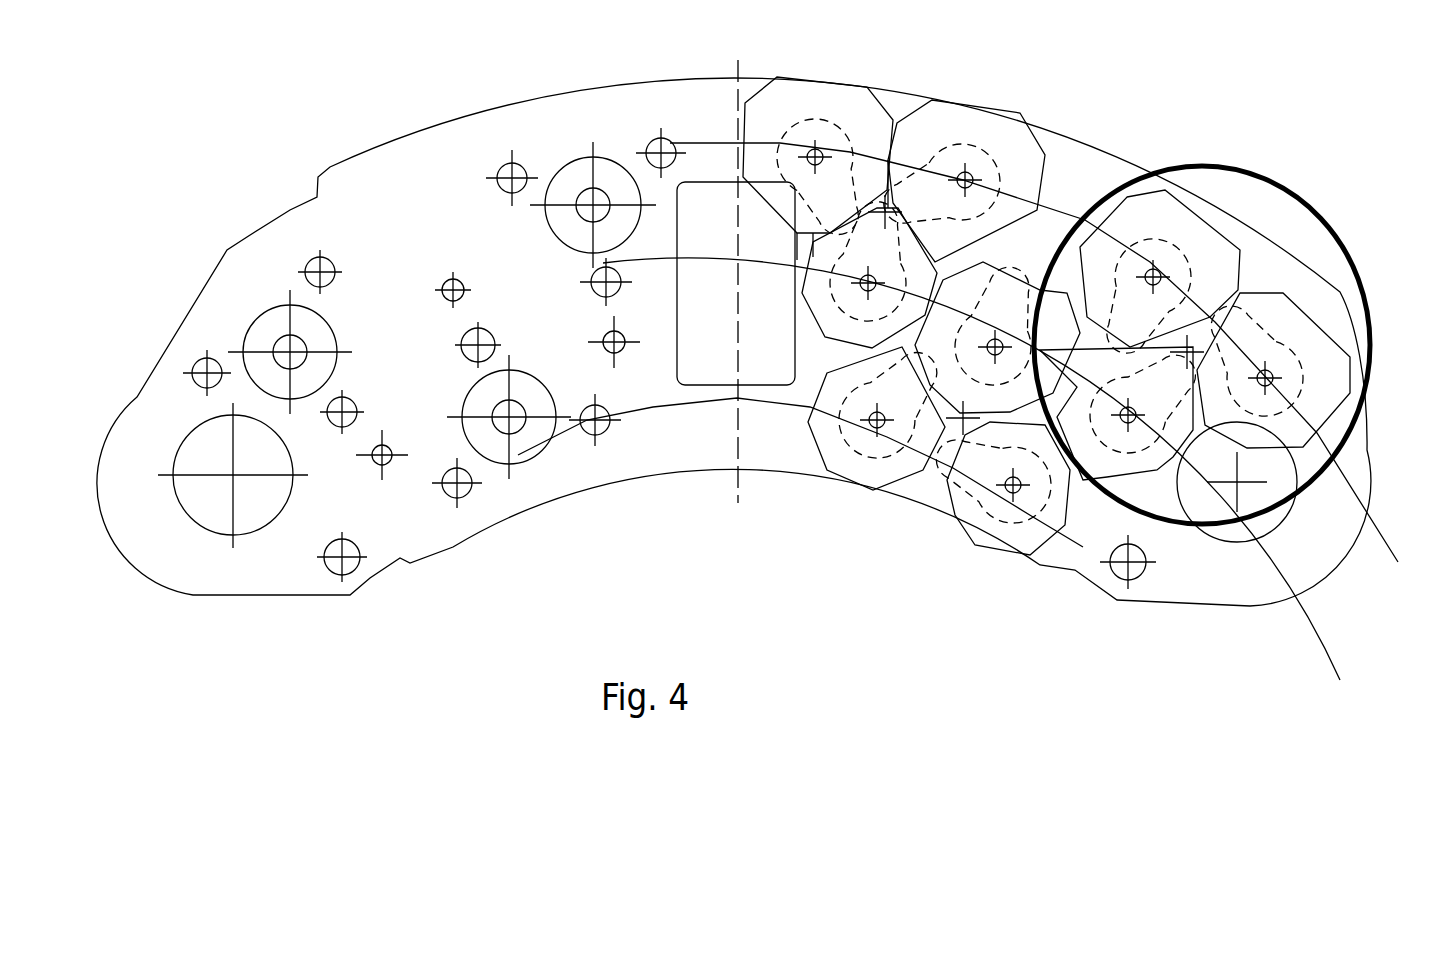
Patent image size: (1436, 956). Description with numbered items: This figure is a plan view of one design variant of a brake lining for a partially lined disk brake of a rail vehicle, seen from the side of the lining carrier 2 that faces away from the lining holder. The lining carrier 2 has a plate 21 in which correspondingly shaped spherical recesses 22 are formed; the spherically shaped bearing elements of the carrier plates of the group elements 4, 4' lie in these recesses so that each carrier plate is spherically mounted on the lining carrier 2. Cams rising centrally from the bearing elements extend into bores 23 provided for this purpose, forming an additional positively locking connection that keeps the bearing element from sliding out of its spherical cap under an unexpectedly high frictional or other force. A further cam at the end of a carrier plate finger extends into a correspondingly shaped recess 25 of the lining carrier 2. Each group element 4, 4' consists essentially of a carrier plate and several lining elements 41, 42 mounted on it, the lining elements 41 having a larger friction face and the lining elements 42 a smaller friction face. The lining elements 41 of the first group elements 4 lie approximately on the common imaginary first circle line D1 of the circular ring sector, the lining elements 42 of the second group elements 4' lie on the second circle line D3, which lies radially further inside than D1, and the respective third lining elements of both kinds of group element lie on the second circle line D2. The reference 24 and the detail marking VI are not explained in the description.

The lining carrier 2 is at (185, 607).
The group element 4 is at (1042, 279).
The group element 4' is at (836, 552).
The plate 21 is at (145, 447).
The spherical recess 22 is at (268, 337).
The bore 23 is at (310, 263).
The large bore 24 is at (252, 508).
The recess 25 is at (383, 460).
The lining element 41 is at (943, 132).
The lining element 42 is at (820, 260).
The detail circle VI is at (1368, 287).
The first circle line D1 is at (1350, 487).
The second circle line D2 is at (1207, 497).
The second circle line D3 is at (1077, 543).